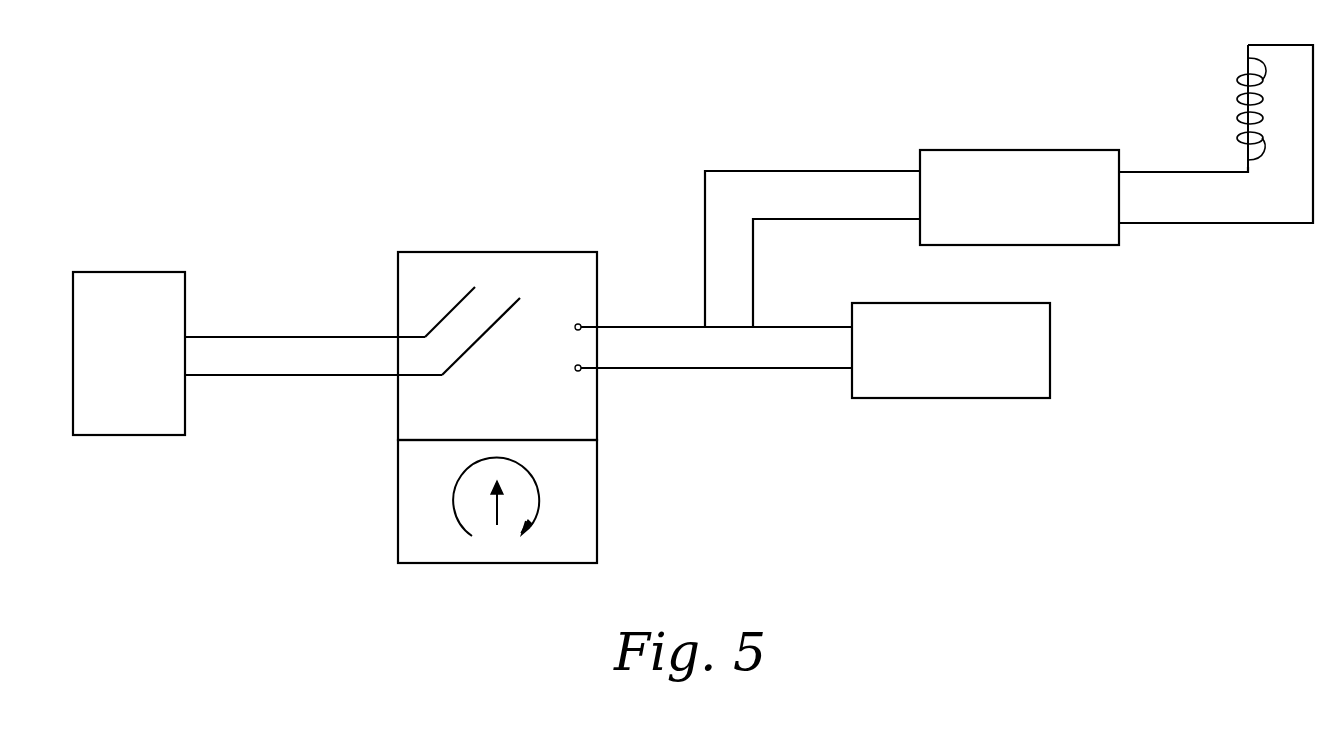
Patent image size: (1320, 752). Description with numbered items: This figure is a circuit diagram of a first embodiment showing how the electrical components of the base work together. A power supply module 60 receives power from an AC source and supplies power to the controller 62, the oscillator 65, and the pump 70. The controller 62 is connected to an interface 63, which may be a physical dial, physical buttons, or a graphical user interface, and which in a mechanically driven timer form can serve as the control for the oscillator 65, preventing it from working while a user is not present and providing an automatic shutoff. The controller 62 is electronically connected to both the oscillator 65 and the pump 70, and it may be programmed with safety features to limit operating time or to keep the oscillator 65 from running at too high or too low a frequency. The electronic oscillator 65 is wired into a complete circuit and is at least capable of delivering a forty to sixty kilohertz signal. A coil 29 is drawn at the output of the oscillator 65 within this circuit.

The coil 29 is at (1240, 100).
The power supply module 60 is at (118, 368).
The controller 62 is at (485, 406).
The interface 63 is at (555, 550).
The oscillator 65 is at (1008, 212).
The pump 70 is at (938, 364).